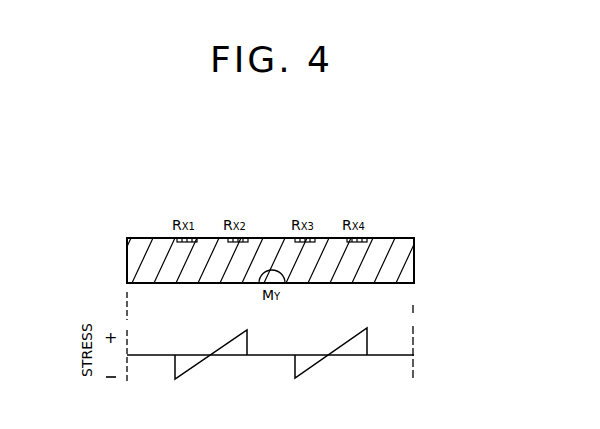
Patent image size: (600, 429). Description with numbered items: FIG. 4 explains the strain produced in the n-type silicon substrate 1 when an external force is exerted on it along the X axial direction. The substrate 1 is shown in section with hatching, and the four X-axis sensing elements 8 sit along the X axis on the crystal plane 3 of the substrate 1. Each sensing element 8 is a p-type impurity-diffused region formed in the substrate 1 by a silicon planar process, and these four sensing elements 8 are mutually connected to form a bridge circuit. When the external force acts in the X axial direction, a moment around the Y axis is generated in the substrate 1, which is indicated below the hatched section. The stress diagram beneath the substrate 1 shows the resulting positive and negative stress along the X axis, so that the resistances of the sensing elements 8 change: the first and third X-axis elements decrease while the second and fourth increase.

The n-type silicon substrate 1 is at (150, 248).
The sensing element 8 is at (260, 238).
The {110} plane 3 is at (408, 238).